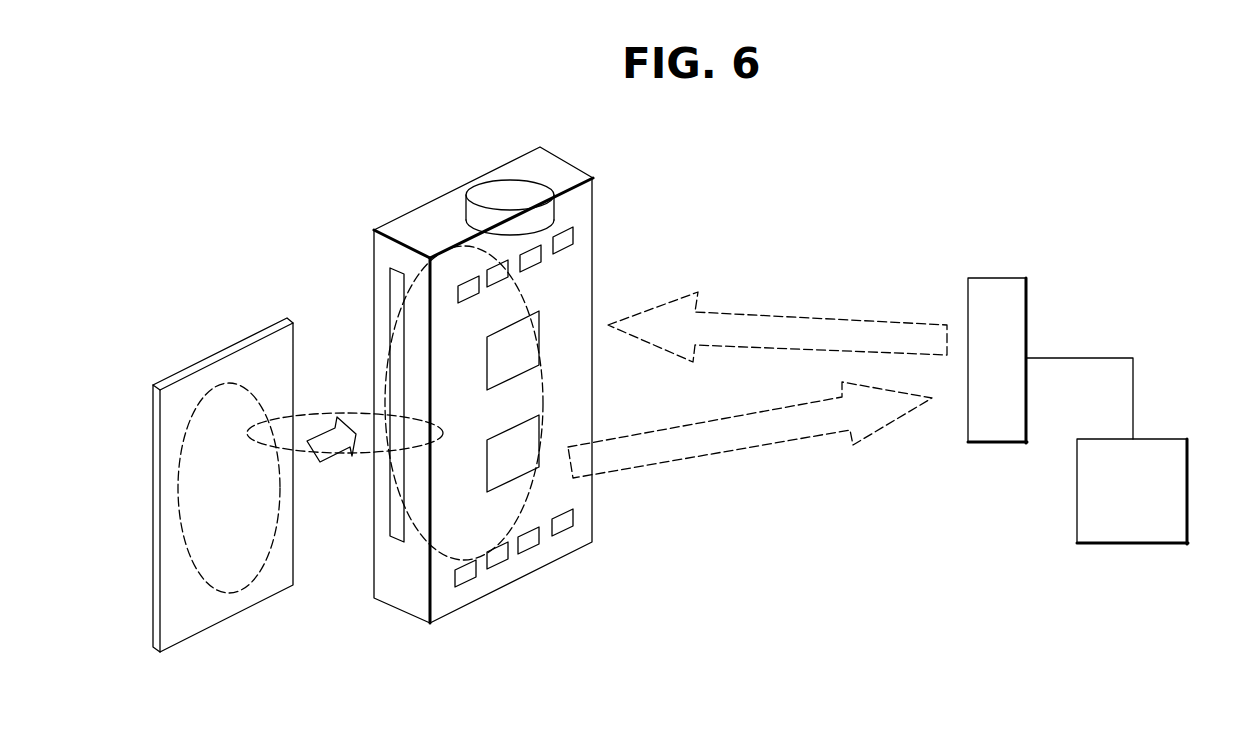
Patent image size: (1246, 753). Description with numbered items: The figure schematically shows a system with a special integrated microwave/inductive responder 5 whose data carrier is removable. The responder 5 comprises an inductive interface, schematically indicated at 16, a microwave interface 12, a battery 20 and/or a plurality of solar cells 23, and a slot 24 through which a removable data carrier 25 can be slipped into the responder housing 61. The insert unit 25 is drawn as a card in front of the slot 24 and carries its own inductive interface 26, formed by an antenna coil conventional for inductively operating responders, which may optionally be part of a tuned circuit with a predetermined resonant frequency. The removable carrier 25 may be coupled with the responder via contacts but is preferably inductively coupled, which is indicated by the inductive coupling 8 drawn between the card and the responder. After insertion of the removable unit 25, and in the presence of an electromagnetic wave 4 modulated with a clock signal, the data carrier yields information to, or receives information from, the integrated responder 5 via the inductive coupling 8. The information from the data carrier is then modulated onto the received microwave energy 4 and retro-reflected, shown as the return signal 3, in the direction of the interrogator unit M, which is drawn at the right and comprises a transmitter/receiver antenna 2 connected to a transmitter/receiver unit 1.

The transmitter/receiver unit 1 is at (1130, 545).
The transmitter/receiver antenna 2 is at (995, 444).
The transmitted signal 3 is at (718, 455).
The electromagnetic wave 4 is at (816, 318).
The integrated responder 5 is at (397, 600).
The inductive coupling 8 is at (360, 453).
The microwave interface 12 is at (493, 457).
The inductive interface 16 is at (543, 388).
The battery 20 is at (495, 190).
The solar cells 23 is at (567, 240).
The slot 24 is at (397, 282).
The removable data carrier 25 is at (200, 620).
The inductive interface 26 is at (217, 383).
The responder housing 61 is at (567, 162).
The interrogator unit M is at (1163, 348).